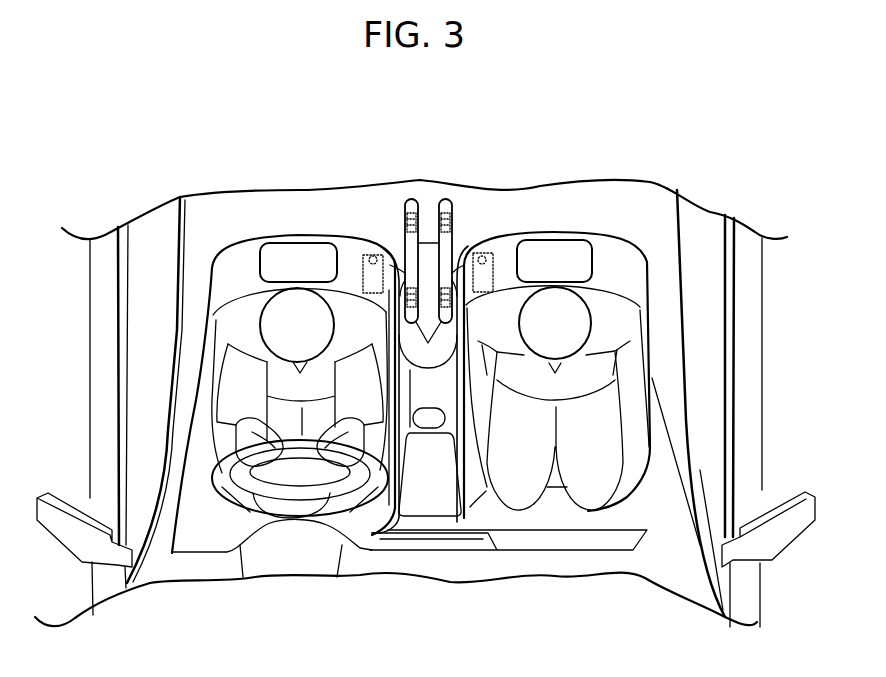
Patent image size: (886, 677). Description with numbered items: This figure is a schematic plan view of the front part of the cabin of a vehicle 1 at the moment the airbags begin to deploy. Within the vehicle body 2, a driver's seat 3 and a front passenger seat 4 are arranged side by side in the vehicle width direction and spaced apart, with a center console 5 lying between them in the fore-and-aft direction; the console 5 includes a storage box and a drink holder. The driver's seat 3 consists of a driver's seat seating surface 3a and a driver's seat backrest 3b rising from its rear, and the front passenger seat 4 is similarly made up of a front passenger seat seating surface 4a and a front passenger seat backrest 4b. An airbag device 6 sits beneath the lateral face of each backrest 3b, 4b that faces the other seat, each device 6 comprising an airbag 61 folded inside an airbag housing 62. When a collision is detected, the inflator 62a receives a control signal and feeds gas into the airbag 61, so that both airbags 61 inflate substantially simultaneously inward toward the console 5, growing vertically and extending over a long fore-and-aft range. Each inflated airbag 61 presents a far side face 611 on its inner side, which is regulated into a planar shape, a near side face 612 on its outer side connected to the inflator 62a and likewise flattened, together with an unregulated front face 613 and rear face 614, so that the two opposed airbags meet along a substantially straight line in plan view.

The vehicle 1 is at (80, 348).
The vehicle body 2 is at (97, 387).
The driver's seat 3 is at (233, 280).
The driver's seat seating surface 3a is at (217, 421).
The driver's seat backrest 3b is at (248, 258).
The front passenger seat 4 is at (622, 278).
The front passenger seat seating surface 4a is at (637, 419).
The front passenger seat backrest 4b is at (603, 260).
The center console 5 is at (427, 383).
The airbag device 6 is at (395, 207).
The airbag 61 is at (412, 266).
The far side face 611 is at (436, 232).
The near side face 612 is at (388, 313).
The front face 613 is at (429, 345).
The rear face 614 is at (412, 197).
The airbag housing 62 is at (363, 254).
The inflator 62a is at (369, 256).